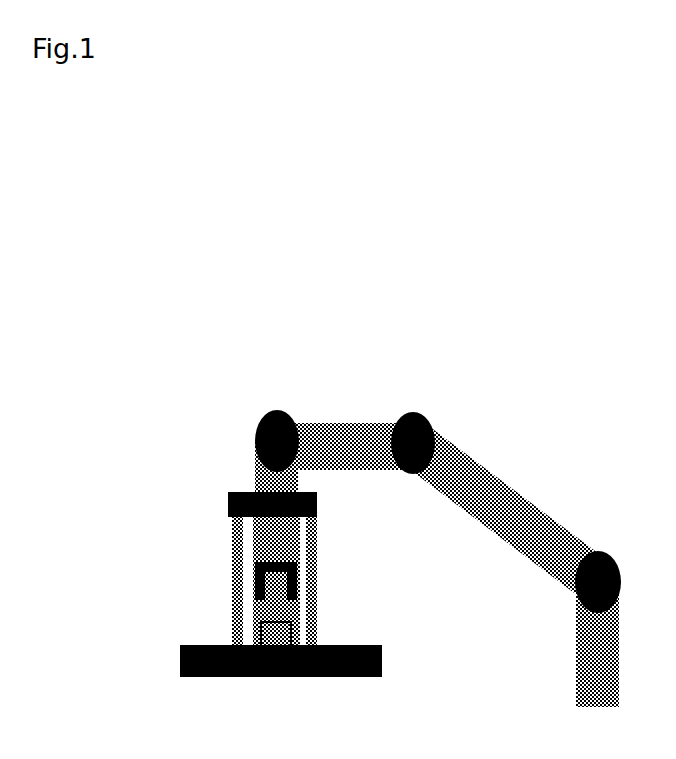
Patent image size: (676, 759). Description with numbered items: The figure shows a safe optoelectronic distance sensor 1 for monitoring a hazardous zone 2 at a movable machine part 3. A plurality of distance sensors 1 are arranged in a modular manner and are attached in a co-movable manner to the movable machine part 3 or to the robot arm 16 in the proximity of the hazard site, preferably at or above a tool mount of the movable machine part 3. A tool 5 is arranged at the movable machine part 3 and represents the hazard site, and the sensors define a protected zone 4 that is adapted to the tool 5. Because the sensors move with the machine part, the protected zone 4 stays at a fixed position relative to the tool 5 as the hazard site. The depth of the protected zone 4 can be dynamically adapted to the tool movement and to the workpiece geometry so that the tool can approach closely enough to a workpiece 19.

The safe optoelectronic distance sensor 1 is at (230, 521).
The hazardous zone 2 is at (197, 613).
The movable machine part 3 is at (262, 488).
The protected zone 4 is at (235, 580).
The tool 5 is at (198, 517).
The robot arm 16 is at (349, 488).
The workpiece 19 is at (282, 637).